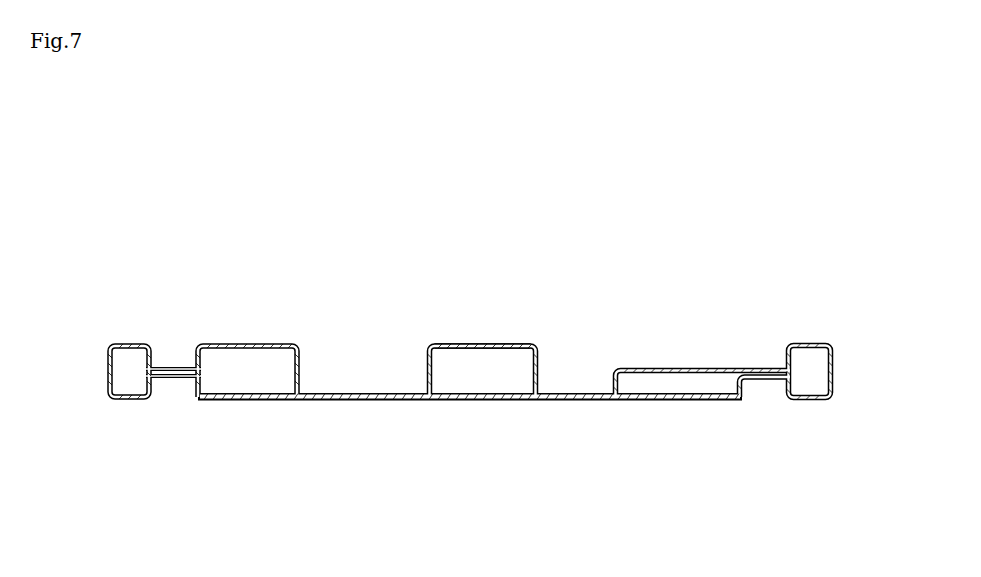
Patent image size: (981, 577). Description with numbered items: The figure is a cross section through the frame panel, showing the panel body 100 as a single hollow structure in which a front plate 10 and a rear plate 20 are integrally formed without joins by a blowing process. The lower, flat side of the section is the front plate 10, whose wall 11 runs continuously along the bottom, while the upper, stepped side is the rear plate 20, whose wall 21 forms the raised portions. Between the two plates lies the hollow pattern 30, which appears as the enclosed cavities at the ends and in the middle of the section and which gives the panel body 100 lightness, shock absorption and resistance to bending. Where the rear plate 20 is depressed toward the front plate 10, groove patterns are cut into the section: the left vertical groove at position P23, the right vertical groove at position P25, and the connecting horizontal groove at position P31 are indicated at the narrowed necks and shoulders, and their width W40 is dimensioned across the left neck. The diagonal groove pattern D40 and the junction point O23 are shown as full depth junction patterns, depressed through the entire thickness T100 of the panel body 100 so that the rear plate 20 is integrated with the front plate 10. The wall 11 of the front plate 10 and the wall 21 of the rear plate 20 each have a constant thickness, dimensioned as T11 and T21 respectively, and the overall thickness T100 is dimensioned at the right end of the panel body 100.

The panel body 100 is at (579, 183).
The front plate 10 is at (276, 406).
The wall of the front plate 11 is at (455, 400).
The rear plate 20 is at (258, 336).
The wall of the rear plate 21 is at (468, 343).
The hollow pattern 30 is at (505, 360).
The position of the left vertical groove pattern P23 is at (174, 354).
The diagonal groove pattern D40 is at (362, 376).
The full depth junction point O23 is at (575, 380).
The position of the connecting horizontal groove pattern P31 is at (680, 358).
The position of a right vertical groove pattern P25 is at (767, 358).
The width of the groove pattern W40 is at (194, 465).
The thickness of the rear plate wall T21 is at (268, 342).
The thickness of the front plate wall T11 is at (485, 398).
The thickness of the panel body T100 is at (833, 343).